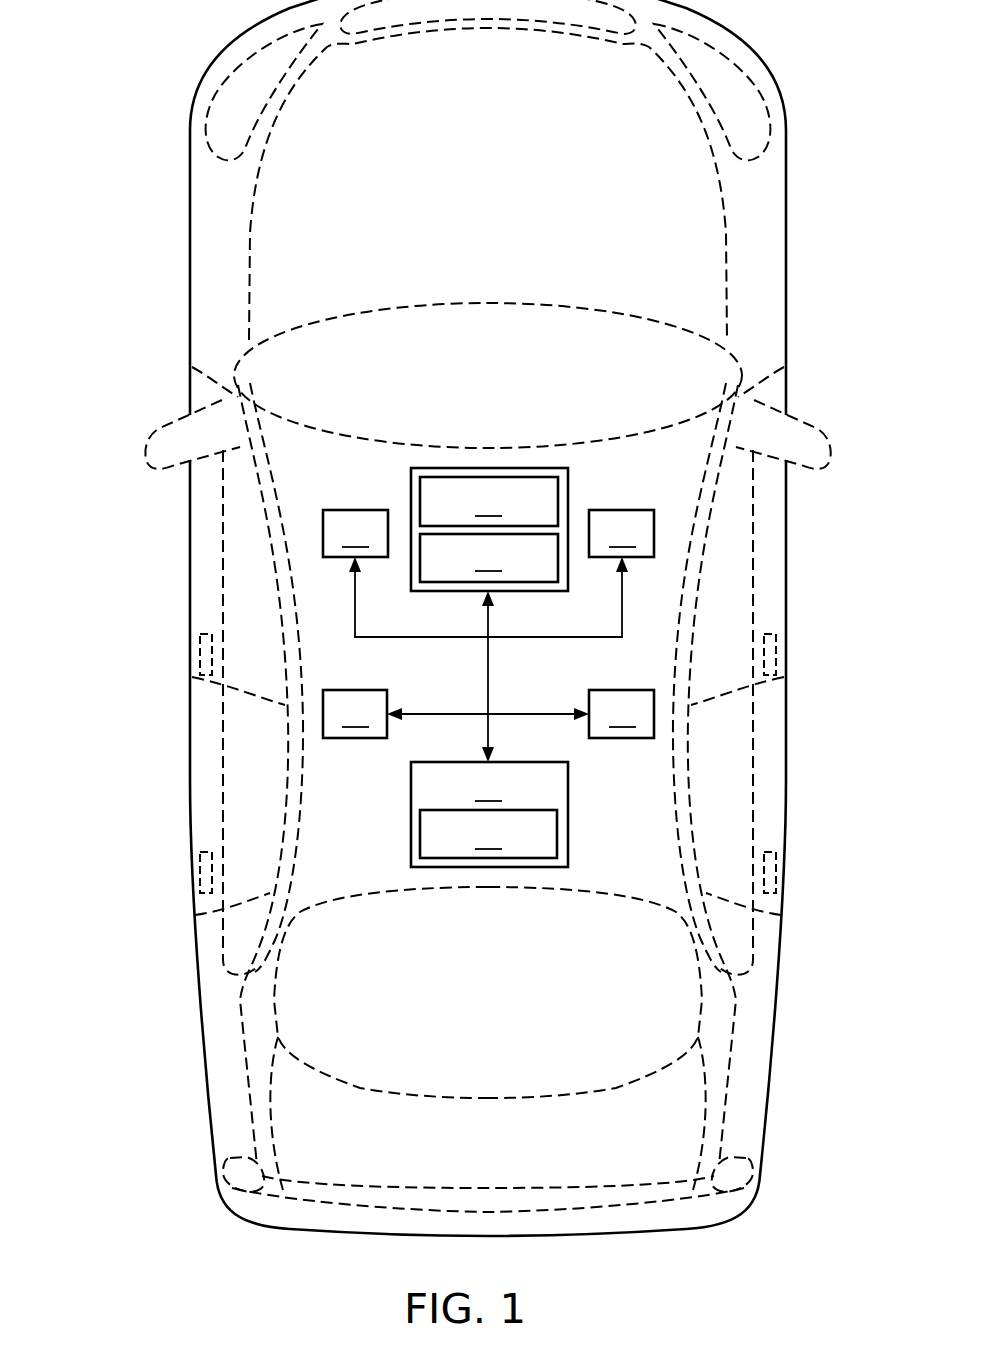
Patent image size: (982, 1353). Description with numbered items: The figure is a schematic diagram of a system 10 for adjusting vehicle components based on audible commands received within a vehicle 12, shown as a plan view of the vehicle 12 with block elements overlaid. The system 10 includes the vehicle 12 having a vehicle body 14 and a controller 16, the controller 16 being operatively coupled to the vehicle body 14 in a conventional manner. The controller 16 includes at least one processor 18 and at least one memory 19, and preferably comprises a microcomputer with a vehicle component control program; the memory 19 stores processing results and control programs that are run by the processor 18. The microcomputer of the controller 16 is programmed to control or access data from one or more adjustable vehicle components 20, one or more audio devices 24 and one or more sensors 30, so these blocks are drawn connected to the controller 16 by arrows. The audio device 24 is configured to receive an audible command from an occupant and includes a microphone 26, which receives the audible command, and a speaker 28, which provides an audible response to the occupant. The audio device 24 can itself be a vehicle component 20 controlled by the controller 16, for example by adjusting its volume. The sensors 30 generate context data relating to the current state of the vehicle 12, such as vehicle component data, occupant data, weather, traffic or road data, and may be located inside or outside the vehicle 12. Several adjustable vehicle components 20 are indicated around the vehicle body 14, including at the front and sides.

The system 10 is at (78, 576).
The vehicle 12 is at (190, 265).
The vehicle body 14 is at (786, 805).
The controller 16 is at (514, 814).
The processor 18 is at (489, 814).
The memory 19 is at (568, 837).
The adjustable vehicle component 20 is at (232, 102).
The audio device 24 is at (489, 491).
The microphone 26 is at (489, 501).
The speaker 28 is at (489, 558).
The sensor 30 is at (488, 714).